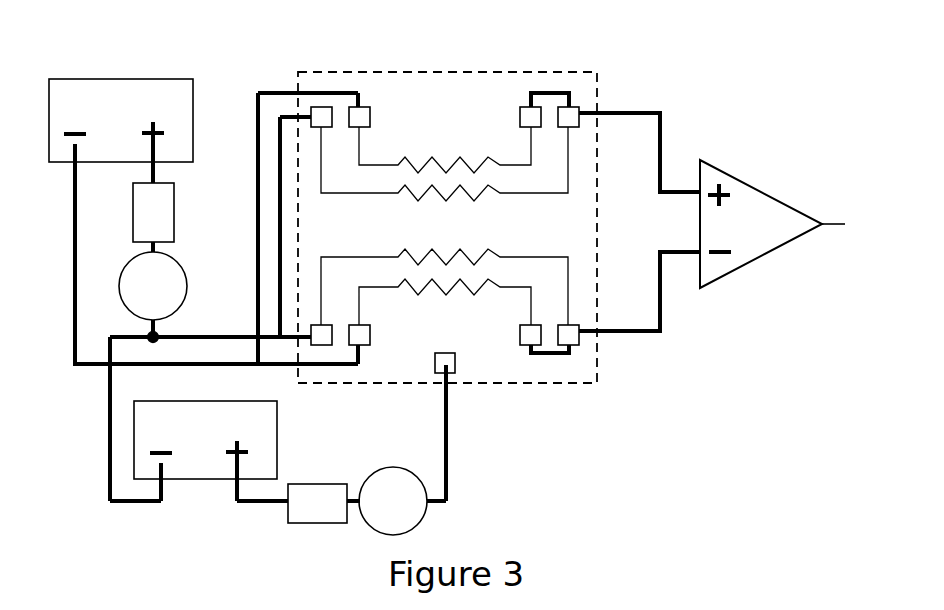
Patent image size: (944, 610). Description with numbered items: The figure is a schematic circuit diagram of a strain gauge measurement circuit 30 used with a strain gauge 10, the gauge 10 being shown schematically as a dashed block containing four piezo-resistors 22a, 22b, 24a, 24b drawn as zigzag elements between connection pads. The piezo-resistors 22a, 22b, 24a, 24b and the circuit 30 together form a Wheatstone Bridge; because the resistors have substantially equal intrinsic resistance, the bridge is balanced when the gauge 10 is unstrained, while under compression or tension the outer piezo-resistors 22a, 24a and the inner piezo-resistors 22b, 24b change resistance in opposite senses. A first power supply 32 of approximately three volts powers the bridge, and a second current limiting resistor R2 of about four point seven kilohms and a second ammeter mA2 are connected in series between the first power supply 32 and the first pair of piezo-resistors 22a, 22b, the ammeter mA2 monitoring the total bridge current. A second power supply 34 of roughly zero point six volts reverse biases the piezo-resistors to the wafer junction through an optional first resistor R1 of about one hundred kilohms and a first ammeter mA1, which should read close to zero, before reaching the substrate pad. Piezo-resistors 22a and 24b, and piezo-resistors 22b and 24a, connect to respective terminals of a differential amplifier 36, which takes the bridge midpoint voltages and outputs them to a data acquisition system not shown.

The strain gauge 10 is at (344, 408).
The outer piezo-resistor 22a is at (506, 171).
The inner piezo-resistor 22b is at (511, 272).
The outer piezo-resistor 24a is at (388, 302).
The inner piezo-resistor 24b is at (390, 143).
The strain gauge measurement circuit 30 is at (527, 448).
The first power supply 32 is at (121, 120).
The second power supply 34 is at (205, 440).
The differential amplifier 36 is at (762, 258).
The first resistor R1 is at (317, 503).
The second current limiting resistor R2 is at (153, 212).
The first ammeter mA1 is at (393, 501).
The second ammeter mA2 is at (153, 286).